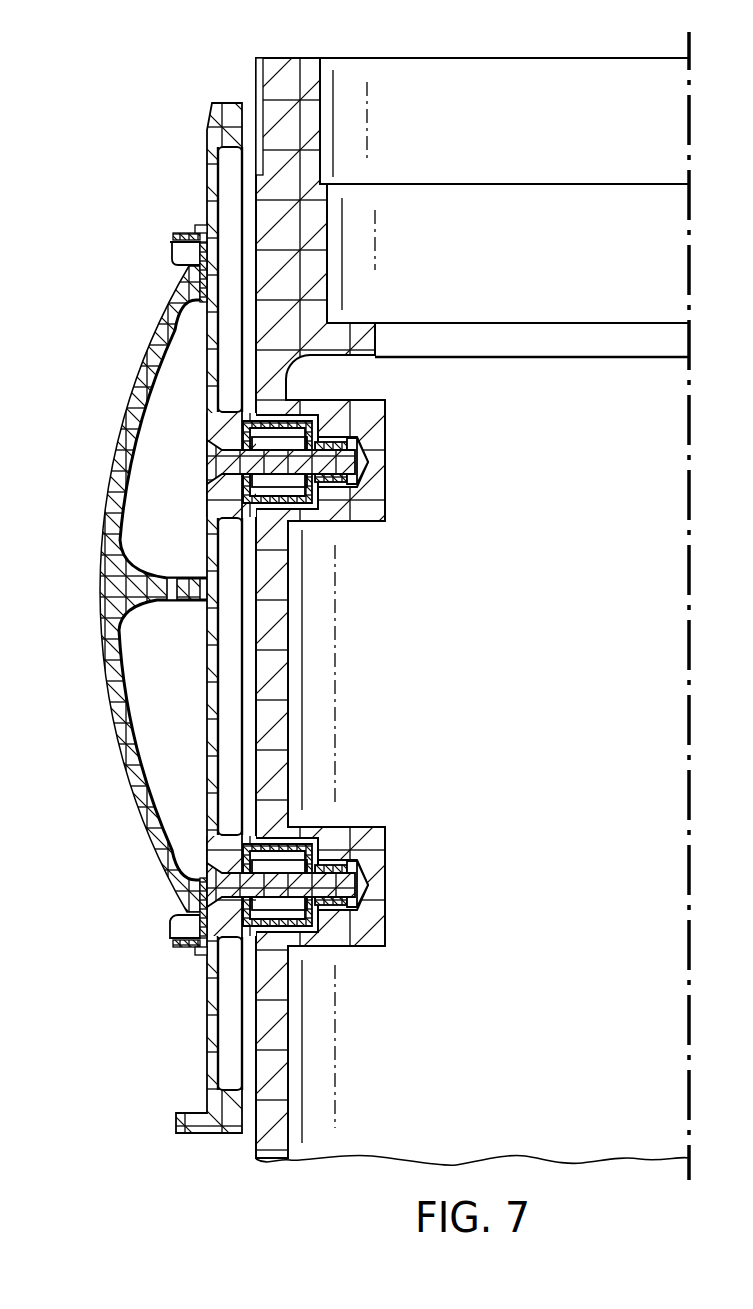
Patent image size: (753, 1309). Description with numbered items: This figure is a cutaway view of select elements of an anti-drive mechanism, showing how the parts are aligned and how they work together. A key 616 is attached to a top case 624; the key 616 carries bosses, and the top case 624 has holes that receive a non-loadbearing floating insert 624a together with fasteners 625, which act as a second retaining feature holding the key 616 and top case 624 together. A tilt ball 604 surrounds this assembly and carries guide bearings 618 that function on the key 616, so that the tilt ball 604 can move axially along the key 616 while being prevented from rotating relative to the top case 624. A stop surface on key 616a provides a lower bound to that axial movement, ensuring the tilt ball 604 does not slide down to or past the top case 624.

The tilt ball 604 is at (112, 581).
The key 616 is at (217, 130).
The stop surface on key 616a is at (202, 1124).
The guide bearing 618 is at (183, 233).
The top case 624 is at (274, 68).
The floating insert 624a is at (335, 481).
The fastener 625 is at (215, 462).